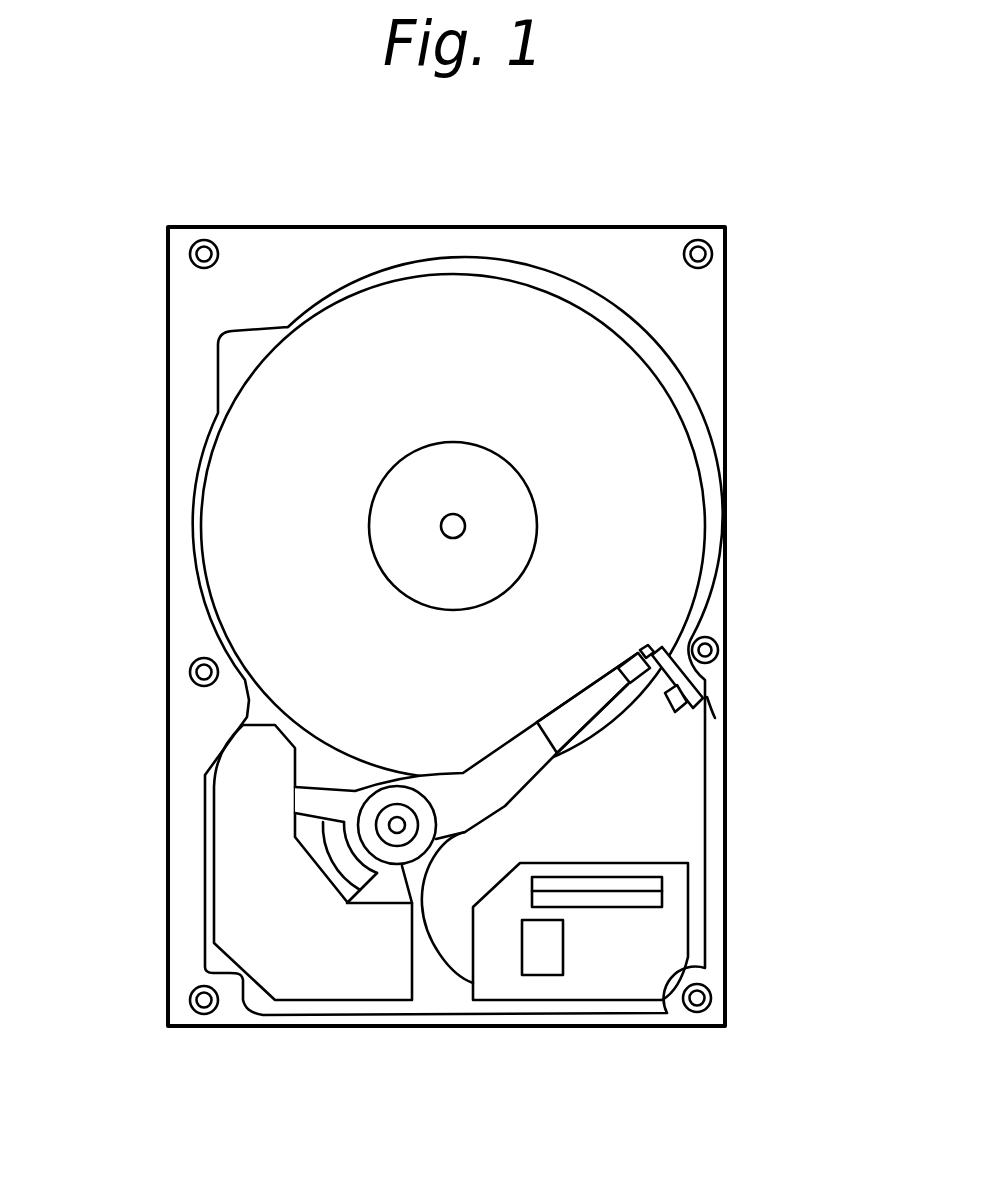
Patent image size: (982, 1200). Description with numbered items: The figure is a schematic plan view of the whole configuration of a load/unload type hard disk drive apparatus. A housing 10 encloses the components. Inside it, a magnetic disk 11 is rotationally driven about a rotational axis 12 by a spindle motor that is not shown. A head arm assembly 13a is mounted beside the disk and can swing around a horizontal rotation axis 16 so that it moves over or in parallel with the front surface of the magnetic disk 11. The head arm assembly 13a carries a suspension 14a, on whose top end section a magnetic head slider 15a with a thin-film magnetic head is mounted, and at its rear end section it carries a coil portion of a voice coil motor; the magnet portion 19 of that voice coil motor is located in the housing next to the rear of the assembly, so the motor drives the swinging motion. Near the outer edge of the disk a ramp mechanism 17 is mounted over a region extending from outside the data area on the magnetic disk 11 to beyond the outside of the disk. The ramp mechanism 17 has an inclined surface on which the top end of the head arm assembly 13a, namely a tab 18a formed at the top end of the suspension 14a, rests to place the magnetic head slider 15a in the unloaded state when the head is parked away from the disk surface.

The housing 10 is at (602, 254).
The magnetic disk 11 is at (672, 525).
The rotational axis 12 is at (455, 514).
The head arm assembly 13a is at (511, 760).
The suspension 14a is at (576, 722).
The magnetic head slider 15a is at (630, 660).
The horizontal rotation axis 16 is at (405, 825).
The ramp mechanism 17 is at (710, 717).
The tab 18a is at (645, 643).
The magnet portion of voice coil motor 19 is at (235, 890).